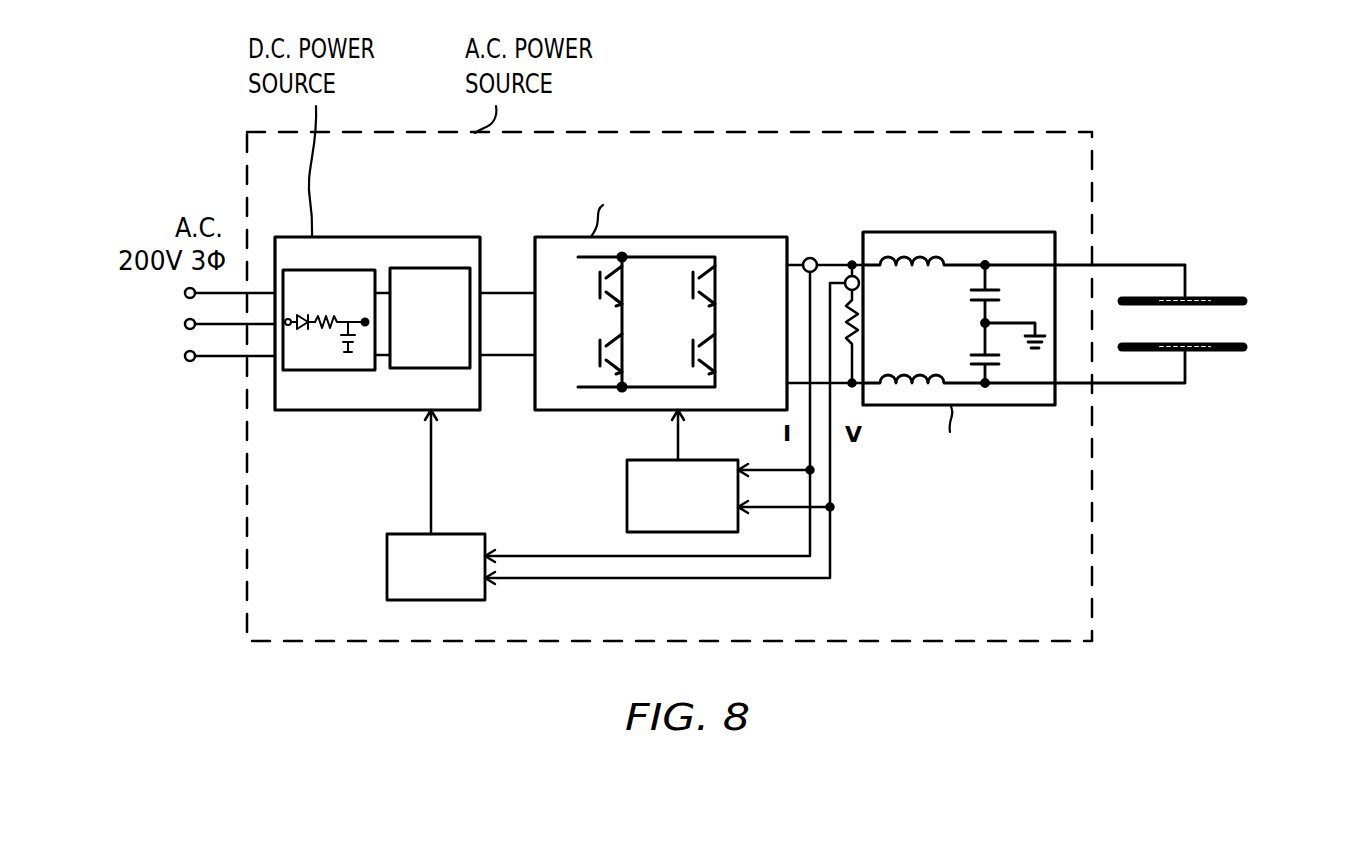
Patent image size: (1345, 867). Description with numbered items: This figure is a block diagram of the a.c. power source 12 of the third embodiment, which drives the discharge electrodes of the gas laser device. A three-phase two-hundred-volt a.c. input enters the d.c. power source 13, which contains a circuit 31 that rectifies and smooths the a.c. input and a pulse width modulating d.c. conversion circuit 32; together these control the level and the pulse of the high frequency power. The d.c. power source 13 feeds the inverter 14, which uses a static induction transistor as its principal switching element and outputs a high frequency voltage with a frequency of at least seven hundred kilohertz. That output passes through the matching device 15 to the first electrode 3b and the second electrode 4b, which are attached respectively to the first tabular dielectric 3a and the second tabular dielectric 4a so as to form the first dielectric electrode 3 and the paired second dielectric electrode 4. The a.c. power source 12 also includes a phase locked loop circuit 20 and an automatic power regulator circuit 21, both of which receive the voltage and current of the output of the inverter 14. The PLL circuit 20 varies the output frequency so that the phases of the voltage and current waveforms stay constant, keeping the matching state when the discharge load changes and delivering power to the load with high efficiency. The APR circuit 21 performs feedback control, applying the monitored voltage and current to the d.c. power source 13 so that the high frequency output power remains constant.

The a.c. power source 12 is at (808, 124).
The d.c. power source 13 is at (405, 312).
The inverter 14 is at (686, 237).
The matching device 15 is at (946, 232).
The phase locked loop (PLL) circuit 20 is at (706, 460).
The automatic power regulator (APR) circuit 21 is at (463, 534).
The rectifying and smoothing circuit 31 is at (323, 370).
The pulse width modulating (PWM) d.c. conversion circuit 32 is at (403, 370).
The first dielectric electrode 3 is at (1215, 276).
The first tabular dielectric 3a is at (1248, 302).
The first electrode 3b is at (1193, 296).
The second dielectric electrode 4 is at (1229, 385).
The second tabular dielectric 4a is at (1247, 348).
The second electrode 4b is at (1193, 354).